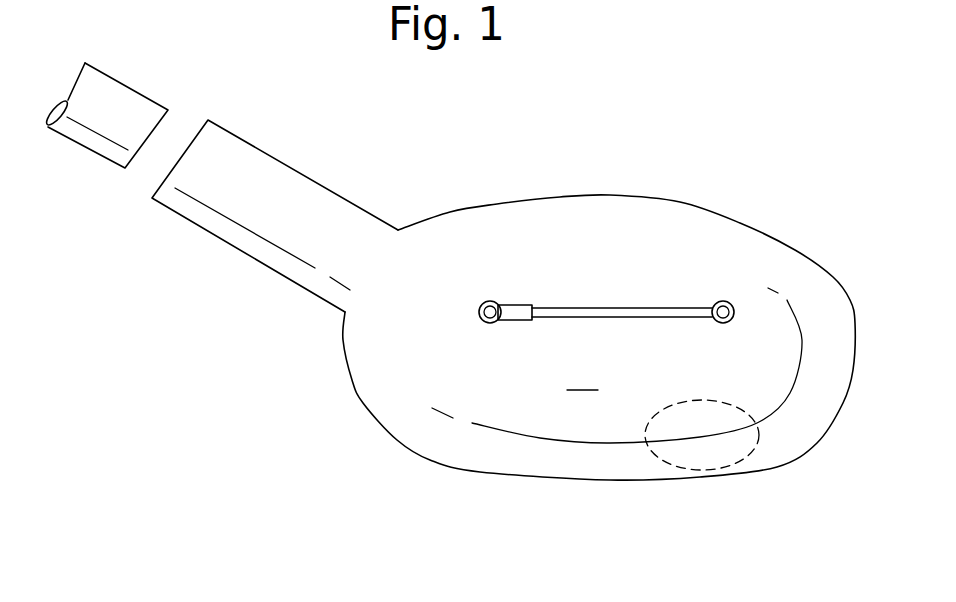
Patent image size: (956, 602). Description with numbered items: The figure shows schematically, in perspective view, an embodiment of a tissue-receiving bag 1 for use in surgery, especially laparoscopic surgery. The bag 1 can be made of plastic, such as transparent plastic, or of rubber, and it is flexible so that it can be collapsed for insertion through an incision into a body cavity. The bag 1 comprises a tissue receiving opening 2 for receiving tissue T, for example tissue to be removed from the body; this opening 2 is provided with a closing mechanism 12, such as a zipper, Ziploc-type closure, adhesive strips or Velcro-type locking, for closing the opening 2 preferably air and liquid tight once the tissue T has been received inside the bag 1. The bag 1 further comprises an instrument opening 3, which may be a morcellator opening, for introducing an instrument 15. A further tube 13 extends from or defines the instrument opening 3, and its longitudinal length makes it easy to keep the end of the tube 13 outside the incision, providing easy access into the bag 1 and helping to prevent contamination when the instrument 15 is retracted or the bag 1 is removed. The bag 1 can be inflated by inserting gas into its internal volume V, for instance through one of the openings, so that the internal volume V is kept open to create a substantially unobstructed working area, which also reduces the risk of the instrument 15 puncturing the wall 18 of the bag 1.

The tissue-receiving bag 1 is at (801, 212).
The tissue receiving opening 2 is at (647, 308).
The instrument opening 3 is at (190, 106).
The closing mechanism 12 is at (512, 314).
The further tube 13 is at (322, 212).
The instrument 15 is at (82, 138).
The wall 18 is at (490, 458).
The tissue T is at (760, 438).
The internal volume V is at (582, 376).